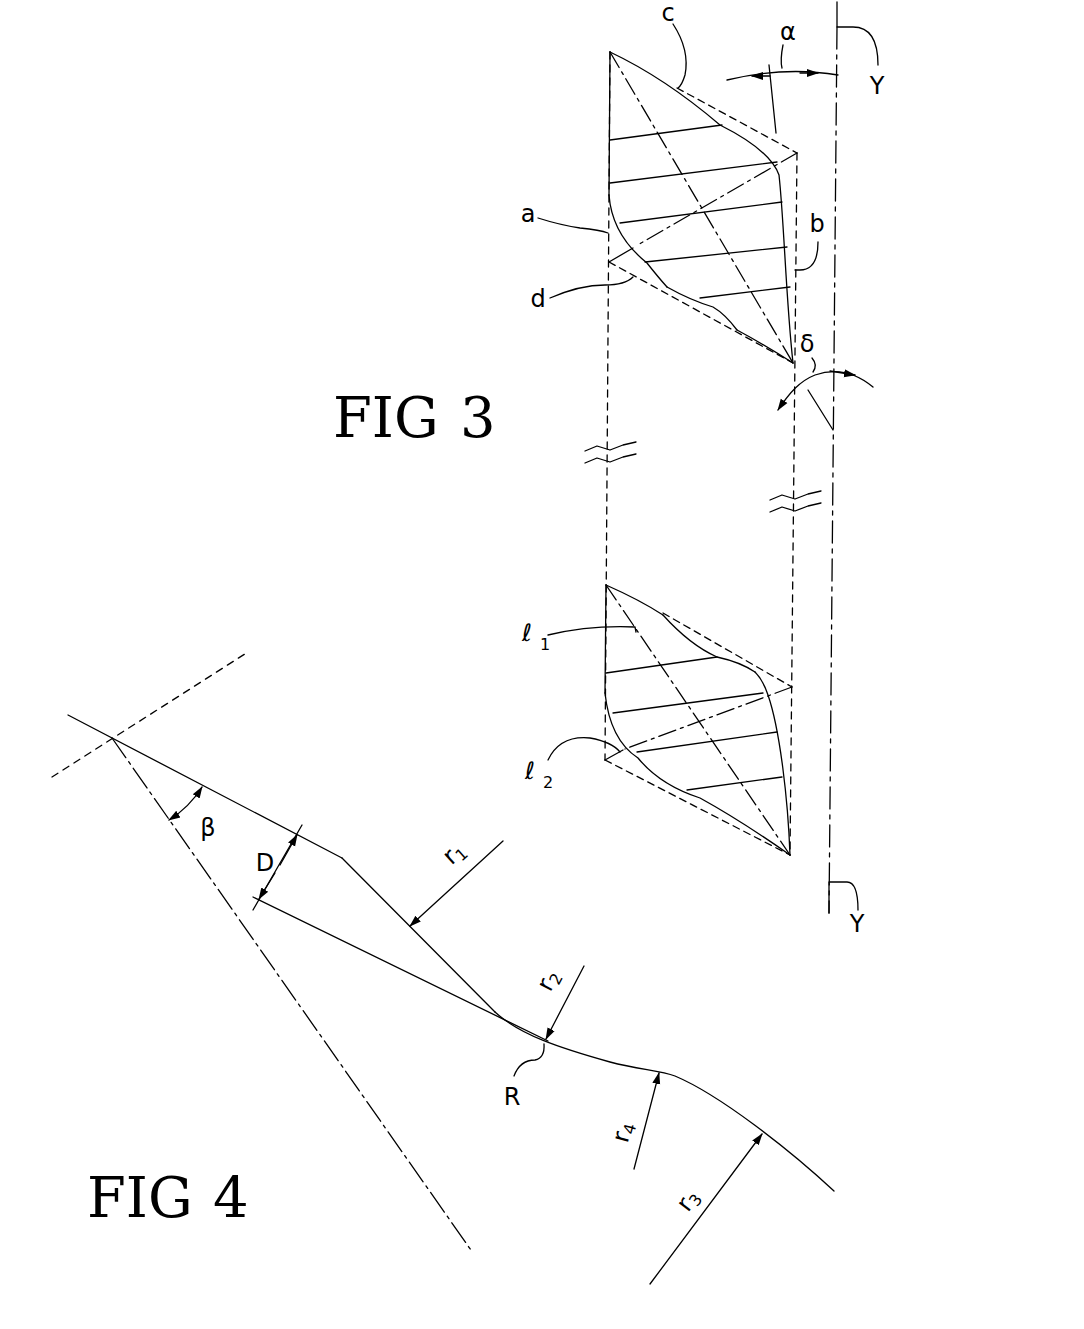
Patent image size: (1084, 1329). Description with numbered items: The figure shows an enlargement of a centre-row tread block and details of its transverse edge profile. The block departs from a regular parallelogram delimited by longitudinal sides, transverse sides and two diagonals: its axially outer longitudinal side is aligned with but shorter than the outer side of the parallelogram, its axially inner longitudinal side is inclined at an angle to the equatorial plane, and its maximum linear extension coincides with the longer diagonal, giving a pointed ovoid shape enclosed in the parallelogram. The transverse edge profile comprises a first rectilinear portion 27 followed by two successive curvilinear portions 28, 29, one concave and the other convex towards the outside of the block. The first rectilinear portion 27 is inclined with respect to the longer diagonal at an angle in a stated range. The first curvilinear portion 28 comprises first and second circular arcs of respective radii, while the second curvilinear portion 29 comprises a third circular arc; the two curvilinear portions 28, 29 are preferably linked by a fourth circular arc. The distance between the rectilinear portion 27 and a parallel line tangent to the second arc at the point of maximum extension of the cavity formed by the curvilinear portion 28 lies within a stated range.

The first rectilinear portion 27 is at (253, 793).
The first curvilinear portion 28 is at (487, 964).
The second curvilinear portion 29 is at (694, 1137).